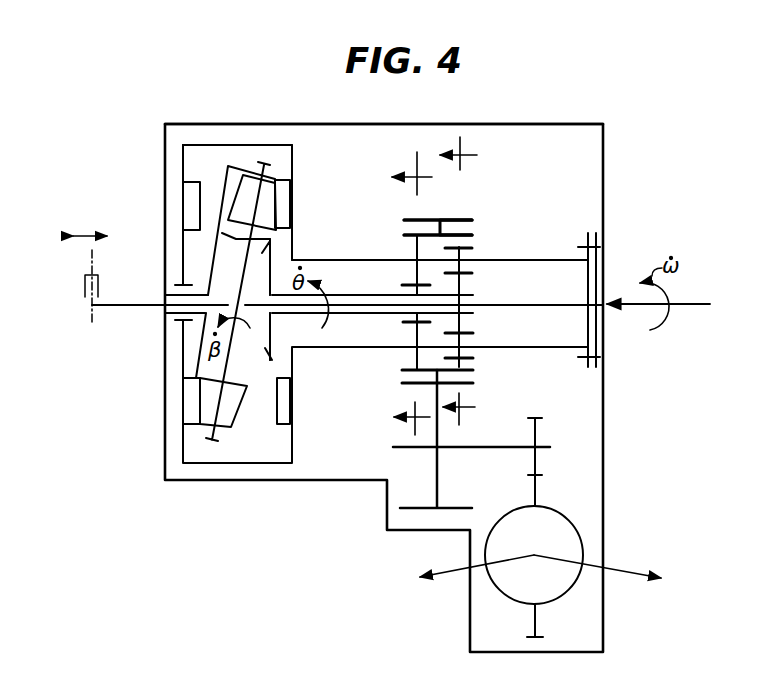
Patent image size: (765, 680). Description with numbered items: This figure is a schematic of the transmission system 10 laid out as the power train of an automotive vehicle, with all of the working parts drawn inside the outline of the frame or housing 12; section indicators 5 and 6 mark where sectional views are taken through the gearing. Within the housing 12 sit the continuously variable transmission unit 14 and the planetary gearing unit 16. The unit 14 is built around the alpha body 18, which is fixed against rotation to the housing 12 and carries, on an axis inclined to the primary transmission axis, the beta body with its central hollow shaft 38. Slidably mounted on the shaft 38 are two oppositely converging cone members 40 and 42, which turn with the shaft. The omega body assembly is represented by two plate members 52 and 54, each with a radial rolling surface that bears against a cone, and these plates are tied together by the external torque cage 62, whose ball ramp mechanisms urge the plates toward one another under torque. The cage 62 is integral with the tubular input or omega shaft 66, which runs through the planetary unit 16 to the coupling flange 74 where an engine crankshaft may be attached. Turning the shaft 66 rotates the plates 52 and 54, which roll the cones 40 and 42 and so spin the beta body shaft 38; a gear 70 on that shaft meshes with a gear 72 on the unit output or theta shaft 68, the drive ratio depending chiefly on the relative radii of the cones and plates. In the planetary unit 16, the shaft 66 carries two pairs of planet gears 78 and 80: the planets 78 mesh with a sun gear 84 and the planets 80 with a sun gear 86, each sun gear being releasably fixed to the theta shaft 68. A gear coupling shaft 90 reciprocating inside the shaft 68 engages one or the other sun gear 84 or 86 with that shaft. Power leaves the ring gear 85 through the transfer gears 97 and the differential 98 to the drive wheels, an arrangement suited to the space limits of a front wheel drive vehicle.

The transmission system 10 is at (623, 197).
The frame or housing 12 is at (495, 123).
The continuously variable transmission unit 14 is at (297, 220).
The planetary gearing unit 16 is at (458, 210).
The alpha body 18 is at (222, 167).
The central hollow shaft 38 is at (231, 352).
The cone member 40 is at (282, 197).
The cone member 42 is at (236, 422).
The plate member 52 is at (199, 200).
The plate member 54 is at (289, 412).
The external torque cage 62 is at (292, 158).
The tubular input or omega shaft 66 is at (310, 259).
The unit output or theta shaft 68 is at (387, 294).
The gear 70 is at (232, 239).
The gear 72 is at (272, 332).
The coupling flange 74 is at (603, 228).
The planet gear pair 78 is at (415, 236).
The planet gear pair 80 is at (461, 253).
The sun gear 84 is at (403, 320).
The ring gear 85 is at (441, 230).
The sun gear 86 is at (460, 325).
The gear coupling shaft 90 is at (142, 306).
The transfer gears 97 is at (480, 447).
The differential 98 is at (580, 557).
The section line 5 is at (412, 296).
The section line 6 is at (459, 282).